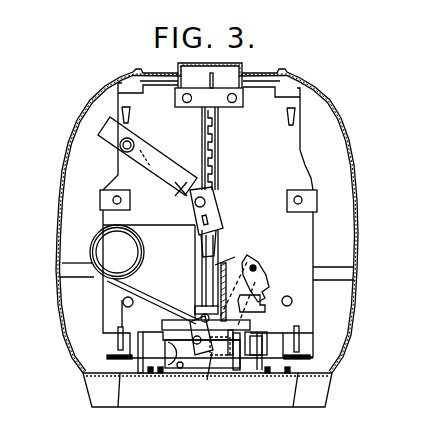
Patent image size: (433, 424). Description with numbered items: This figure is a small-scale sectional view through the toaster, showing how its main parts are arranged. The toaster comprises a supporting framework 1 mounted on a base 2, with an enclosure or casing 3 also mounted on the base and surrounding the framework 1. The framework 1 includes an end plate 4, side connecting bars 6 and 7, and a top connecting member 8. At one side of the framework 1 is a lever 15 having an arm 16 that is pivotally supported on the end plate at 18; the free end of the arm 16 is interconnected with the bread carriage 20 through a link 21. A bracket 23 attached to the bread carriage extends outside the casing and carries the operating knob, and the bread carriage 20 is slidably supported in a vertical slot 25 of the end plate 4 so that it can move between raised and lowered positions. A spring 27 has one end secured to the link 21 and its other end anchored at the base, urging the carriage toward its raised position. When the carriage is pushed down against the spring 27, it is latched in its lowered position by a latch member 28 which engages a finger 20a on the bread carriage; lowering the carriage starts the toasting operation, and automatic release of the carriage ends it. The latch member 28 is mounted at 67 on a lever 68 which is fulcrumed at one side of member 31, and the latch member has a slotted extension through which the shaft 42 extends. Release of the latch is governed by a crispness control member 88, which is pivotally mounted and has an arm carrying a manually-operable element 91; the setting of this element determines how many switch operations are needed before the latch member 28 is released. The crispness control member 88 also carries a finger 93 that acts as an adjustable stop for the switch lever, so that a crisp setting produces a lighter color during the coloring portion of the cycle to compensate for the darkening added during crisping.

The supporting framework 1 is at (263, 176).
The base 2 is at (330, 386).
The casing 3 is at (355, 165).
The end plate 4 is at (298, 140).
The side connecting bar 6 is at (100, 200).
The side connecting bar 7 is at (313, 201).
The top connecting member 8 is at (180, 105).
The lever 15 is at (108, 135).
The arm 16 is at (176, 190).
The pivot 18 is at (119, 150).
The bread carriage 20 is at (204, 277).
The finger 20a is at (265, 284).
The link 21 is at (213, 207).
The bracket 23 is at (227, 278).
The vertical slot 25 is at (215, 133).
The spring 27 is at (90, 246).
The latch member 28 is at (262, 262).
The member 31 is at (256, 333).
The shaft 42 is at (206, 376).
The mounting of latch member 67 is at (222, 370).
The lever 68 is at (188, 366).
The crispness control member 88 is at (165, 322).
The manually-operable element 91 is at (197, 307).
The finger 93 is at (252, 328).